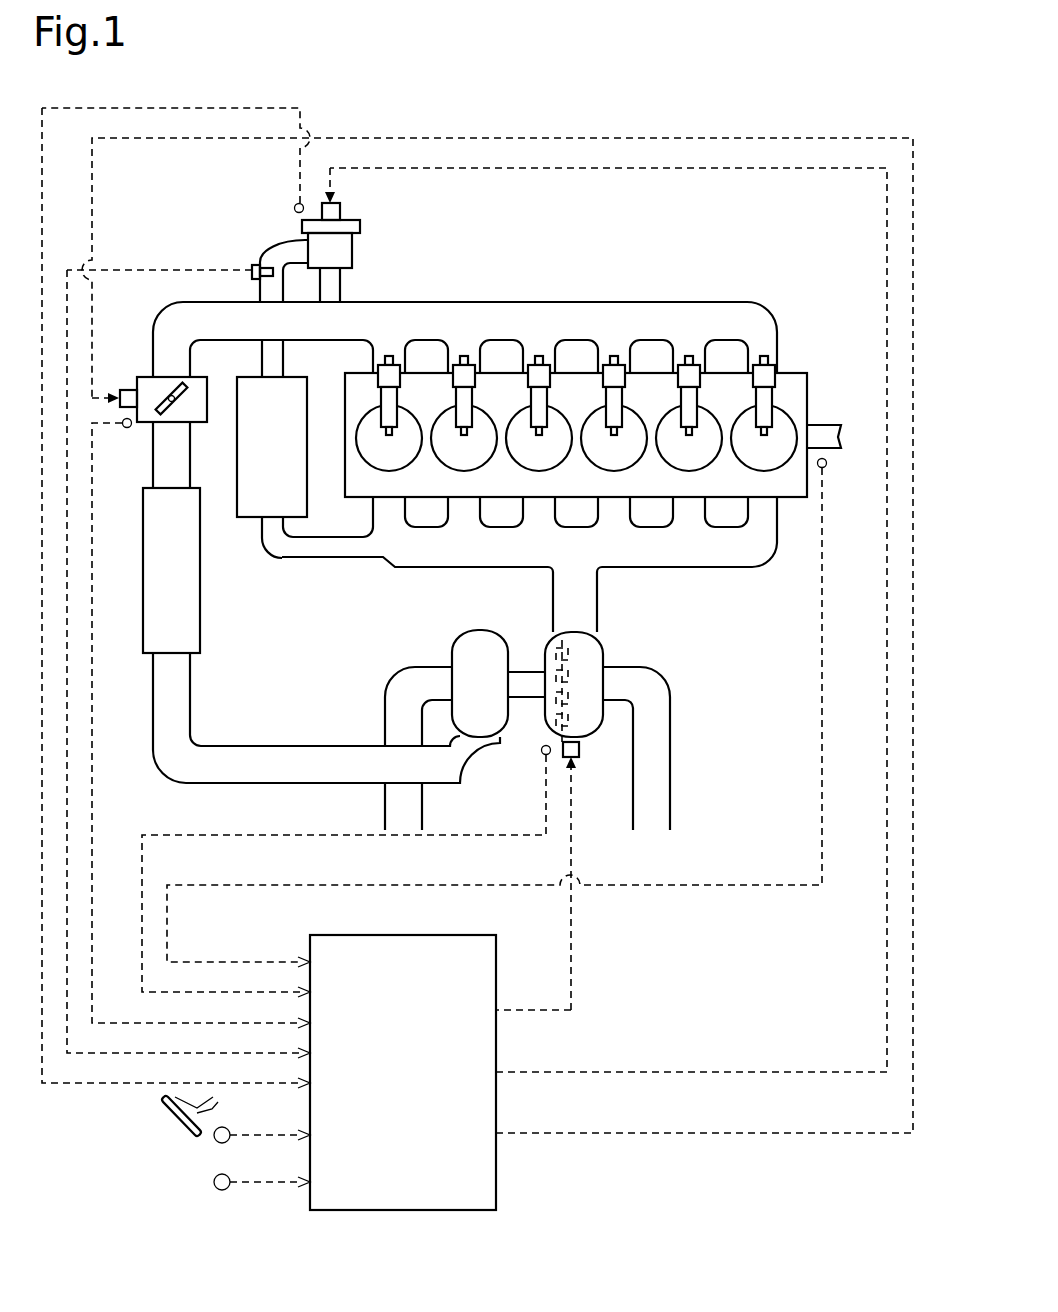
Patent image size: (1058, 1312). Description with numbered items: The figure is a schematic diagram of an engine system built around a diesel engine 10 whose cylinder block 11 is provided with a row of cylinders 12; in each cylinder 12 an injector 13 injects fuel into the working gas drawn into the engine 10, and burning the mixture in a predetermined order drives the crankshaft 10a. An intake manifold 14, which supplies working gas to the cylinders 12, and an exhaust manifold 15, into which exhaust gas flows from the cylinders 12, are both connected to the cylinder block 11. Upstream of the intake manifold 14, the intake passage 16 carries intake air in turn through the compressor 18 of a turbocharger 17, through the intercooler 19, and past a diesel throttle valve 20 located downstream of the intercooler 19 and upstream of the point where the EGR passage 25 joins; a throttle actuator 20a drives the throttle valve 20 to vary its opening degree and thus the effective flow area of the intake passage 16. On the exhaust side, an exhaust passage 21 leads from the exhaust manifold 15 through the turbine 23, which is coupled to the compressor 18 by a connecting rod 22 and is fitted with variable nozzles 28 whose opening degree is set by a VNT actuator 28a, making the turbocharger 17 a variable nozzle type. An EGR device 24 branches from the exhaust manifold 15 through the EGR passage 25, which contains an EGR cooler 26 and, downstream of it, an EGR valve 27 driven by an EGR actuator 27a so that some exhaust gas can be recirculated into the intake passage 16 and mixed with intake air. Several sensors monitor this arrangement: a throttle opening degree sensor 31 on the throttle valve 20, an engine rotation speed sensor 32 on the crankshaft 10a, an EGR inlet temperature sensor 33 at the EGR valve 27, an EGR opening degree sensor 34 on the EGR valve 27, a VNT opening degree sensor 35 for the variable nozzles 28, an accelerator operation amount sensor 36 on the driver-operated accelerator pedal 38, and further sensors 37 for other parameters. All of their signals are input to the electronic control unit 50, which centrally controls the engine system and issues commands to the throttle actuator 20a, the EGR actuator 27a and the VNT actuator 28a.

The diesel engine 10 is at (606, 389).
The crankshaft 10a is at (833, 430).
The cylinder block 11 is at (788, 497).
The cylinders 12 is at (783, 407).
The injector 13 is at (770, 360).
The intake manifold 14 is at (568, 301).
The exhaust manifold 15 is at (727, 556).
The intake passage 16 is at (422, 813).
The turbocharger 17 is at (396, 800).
The compressor 18 is at (478, 730).
The intercooler 19 is at (152, 607).
The diesel throttle valve 20 is at (151, 377).
The throttle actuator 20a is at (128, 390).
The exhaust passage 21 is at (670, 812).
The connecting rod 22 is at (520, 672).
The turbine 23 is at (603, 718).
The EGR device 24 is at (226, 372).
The EGR passage 25 is at (325, 558).
The EGR cooler 26 is at (299, 507).
The EGR valve 27 is at (307, 245).
The EGR actuator 27a is at (341, 222).
The variable nozzles 28 is at (573, 650).
The VNT actuator 28a is at (574, 762).
The throttle opening degree sensor 31 is at (127, 428).
The engine rotation speed sensor 32 is at (826, 467).
The EGR inlet temperature sensor 33 is at (252, 270).
The EGR opening degree sensor 34 is at (294, 208).
The VNT opening degree sensor 35 is at (544, 757).
The accelerator operation amount sensor 36 is at (216, 1143).
The sensors 37 is at (216, 1190).
The accelerator pedal 38 is at (163, 1108).
The electronic control unit 50 is at (377, 934).